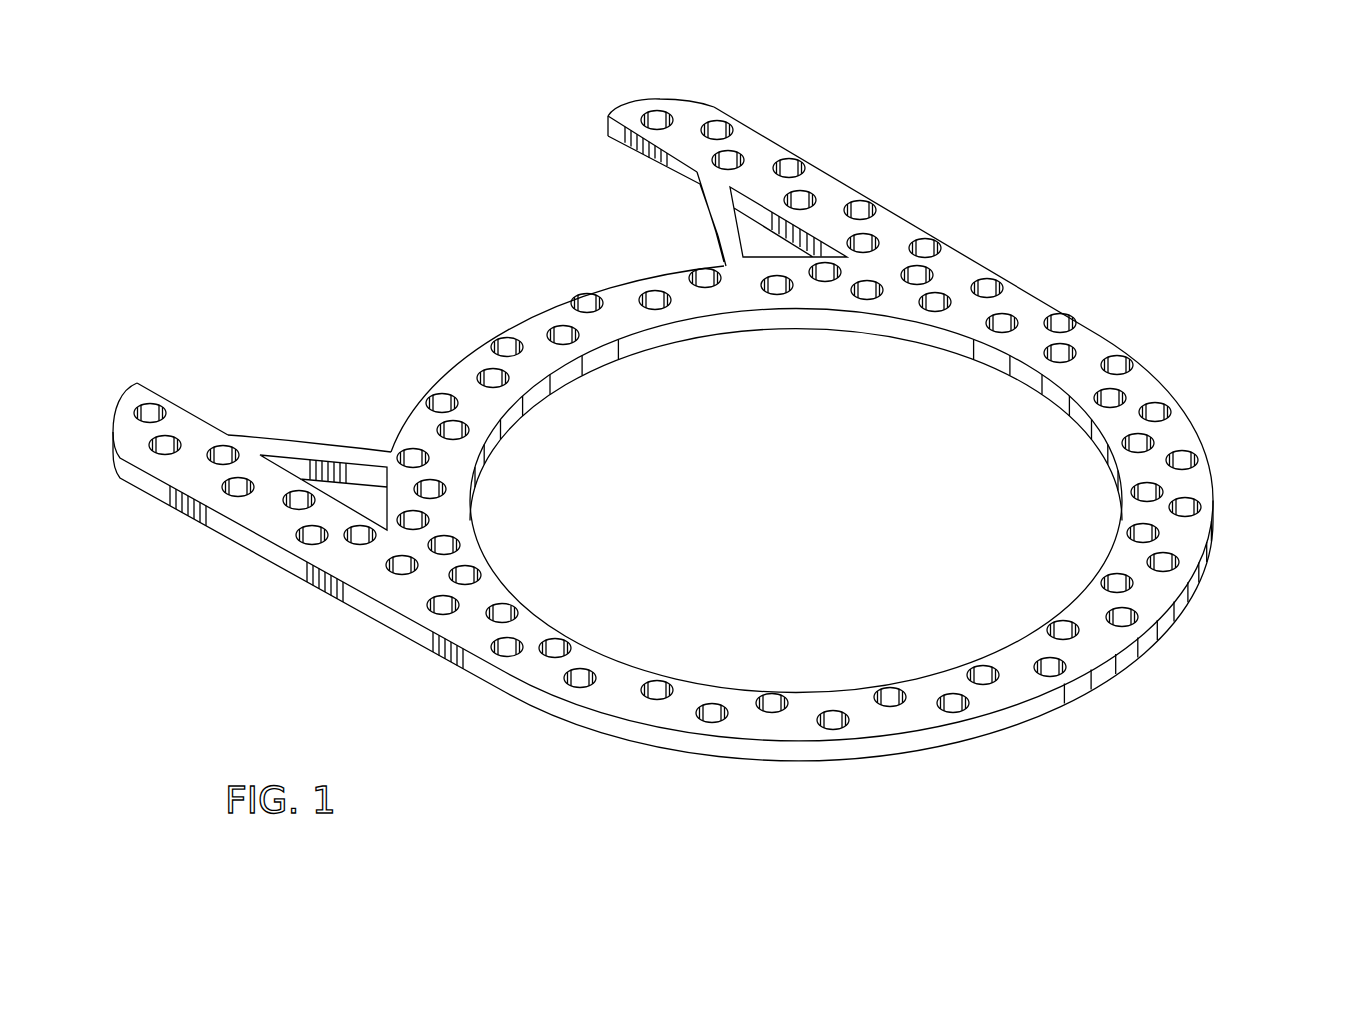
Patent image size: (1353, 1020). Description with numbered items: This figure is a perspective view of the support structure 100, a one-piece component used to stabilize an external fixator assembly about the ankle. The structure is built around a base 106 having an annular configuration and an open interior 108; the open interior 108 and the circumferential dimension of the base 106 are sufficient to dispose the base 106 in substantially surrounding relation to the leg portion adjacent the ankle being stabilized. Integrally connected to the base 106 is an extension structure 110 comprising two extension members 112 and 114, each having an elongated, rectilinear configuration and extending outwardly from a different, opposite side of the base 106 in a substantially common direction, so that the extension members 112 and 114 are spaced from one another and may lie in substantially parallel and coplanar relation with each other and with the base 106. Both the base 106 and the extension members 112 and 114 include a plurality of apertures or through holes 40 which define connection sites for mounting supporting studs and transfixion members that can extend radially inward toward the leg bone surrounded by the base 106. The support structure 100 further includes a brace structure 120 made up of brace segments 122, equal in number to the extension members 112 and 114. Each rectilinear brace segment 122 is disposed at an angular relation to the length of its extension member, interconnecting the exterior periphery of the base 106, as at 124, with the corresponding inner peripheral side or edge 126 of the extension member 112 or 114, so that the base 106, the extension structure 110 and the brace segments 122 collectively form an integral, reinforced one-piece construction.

The apertures 40 is at (985, 287).
The support structure 100 is at (1135, 291).
The base 106 is at (1207, 437).
The open interior 108 is at (777, 504).
The extension structure 110 is at (858, 126).
The extension member 112 is at (717, 105).
The extension member 114 is at (288, 552).
The brace structure 120 is at (551, 161).
The brace segments 122 is at (705, 212).
The exterior periphery of the base 124 is at (718, 258).
The inner peripheral side 126 is at (690, 180).